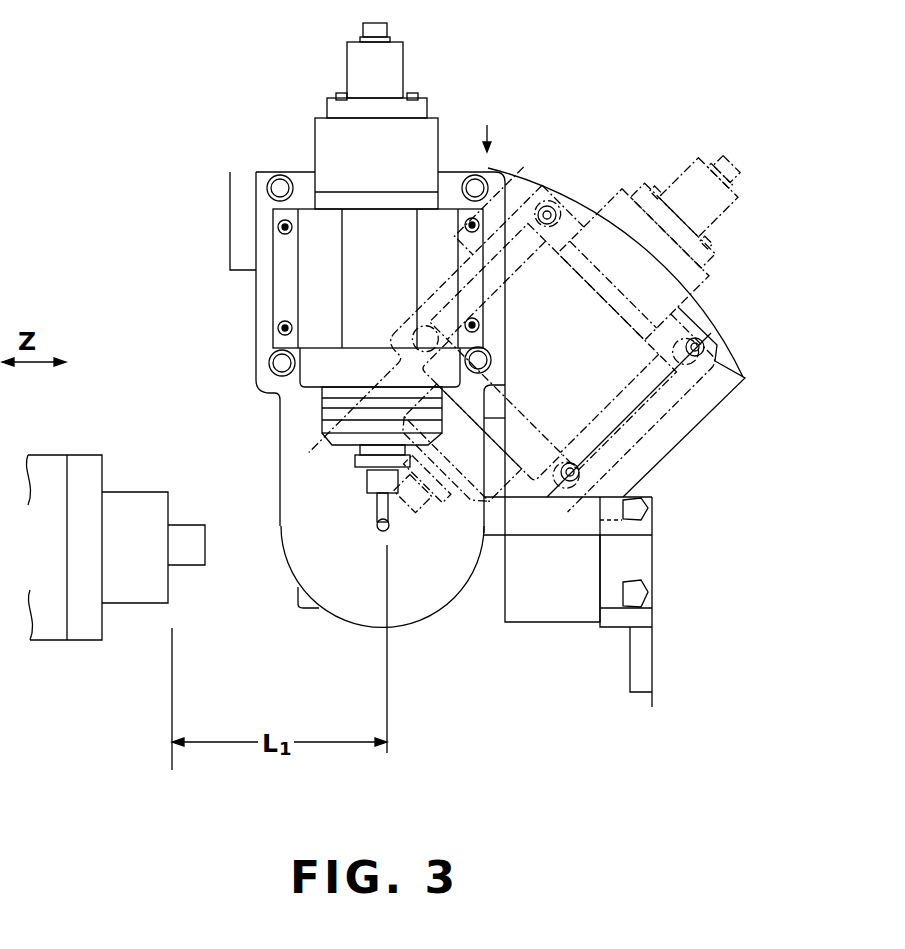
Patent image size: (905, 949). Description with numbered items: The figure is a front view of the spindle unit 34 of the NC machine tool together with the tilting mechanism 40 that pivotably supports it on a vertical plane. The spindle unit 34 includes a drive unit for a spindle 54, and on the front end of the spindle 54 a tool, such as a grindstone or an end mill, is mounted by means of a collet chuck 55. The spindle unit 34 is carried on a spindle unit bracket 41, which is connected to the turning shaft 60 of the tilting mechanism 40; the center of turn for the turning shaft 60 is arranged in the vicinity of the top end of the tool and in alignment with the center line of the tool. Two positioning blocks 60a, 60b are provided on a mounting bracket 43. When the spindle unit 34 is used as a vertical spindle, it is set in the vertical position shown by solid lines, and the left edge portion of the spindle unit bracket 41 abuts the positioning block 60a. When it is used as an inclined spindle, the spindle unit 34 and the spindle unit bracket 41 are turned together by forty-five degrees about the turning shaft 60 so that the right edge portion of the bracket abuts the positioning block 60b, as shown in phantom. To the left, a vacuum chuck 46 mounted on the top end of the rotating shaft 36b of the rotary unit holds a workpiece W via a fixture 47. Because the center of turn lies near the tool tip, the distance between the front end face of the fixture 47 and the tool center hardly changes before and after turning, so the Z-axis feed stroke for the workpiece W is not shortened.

The tilting mechanism 40 is at (520, 152).
The spindle unit bracket 41 is at (292, 421).
The mounting bracket 43 is at (557, 600).
The spindle unit 34 is at (350, 305).
The positioning block 60a is at (315, 306).
The positioning block 60b is at (677, 423).
The spindle 54 is at (357, 447).
The collet chuck 55 is at (368, 487).
The turning shaft 60 is at (390, 533).
The rotating shaft 36b is at (123, 554).
The vacuum chuck 46 is at (82, 455).
The fixture 47 is at (138, 492).
The workpiece W is at (192, 567).